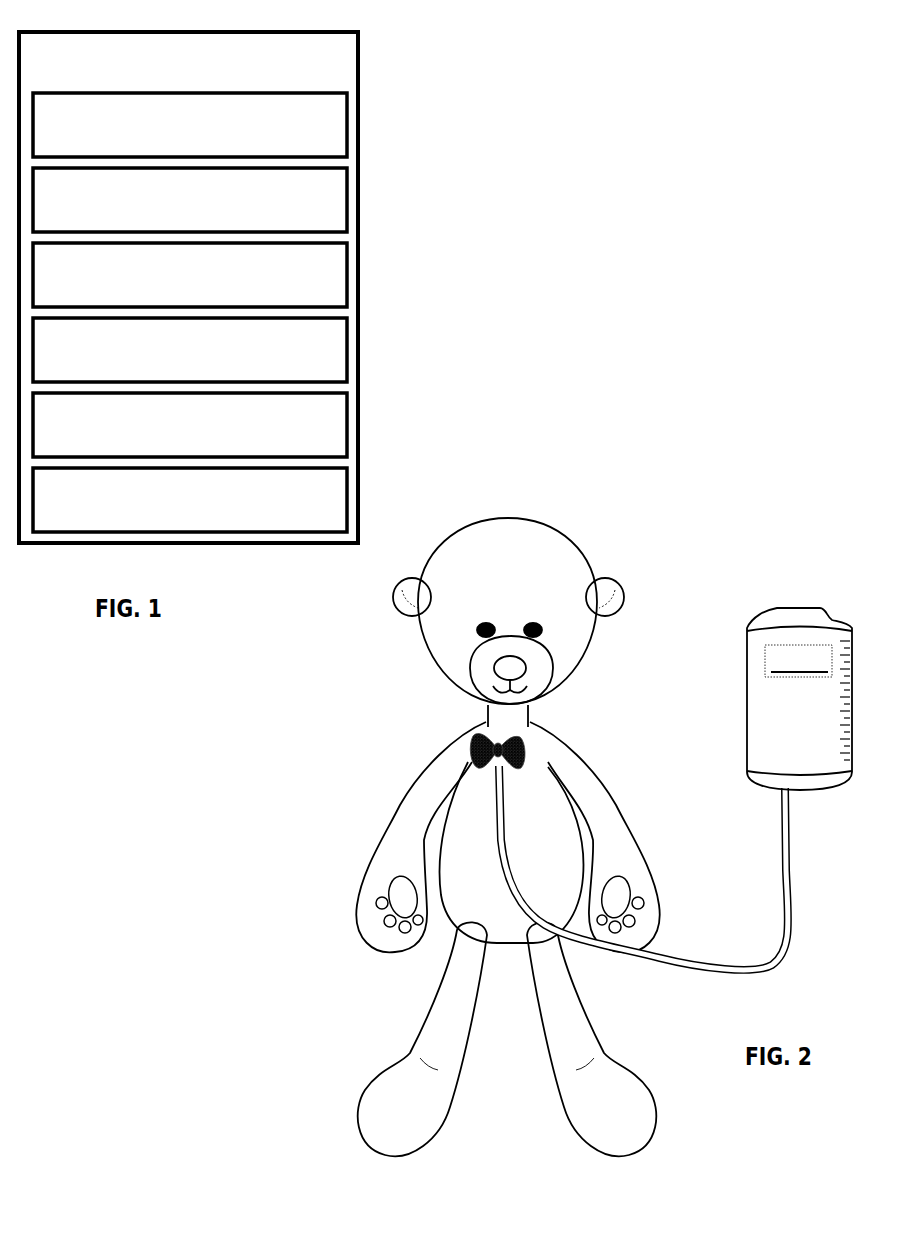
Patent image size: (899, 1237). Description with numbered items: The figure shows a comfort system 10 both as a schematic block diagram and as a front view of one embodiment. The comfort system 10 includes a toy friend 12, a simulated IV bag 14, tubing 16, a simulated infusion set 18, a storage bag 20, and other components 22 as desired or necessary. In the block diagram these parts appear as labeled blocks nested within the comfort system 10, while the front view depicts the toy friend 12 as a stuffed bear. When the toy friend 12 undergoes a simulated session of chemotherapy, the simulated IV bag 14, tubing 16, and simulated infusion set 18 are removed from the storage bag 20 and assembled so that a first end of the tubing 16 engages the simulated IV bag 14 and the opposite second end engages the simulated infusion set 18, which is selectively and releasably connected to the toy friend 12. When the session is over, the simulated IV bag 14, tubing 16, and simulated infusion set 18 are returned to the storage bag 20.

In FIG. 1, the comfort system 10 is at (284, 67).
In FIG. 2, the comfort system 10 is at (595, 422).
In FIG. 1, the toy friend 12 is at (255, 131).
In FIG. 2, the toy friend 12 is at (495, 497).
In FIG. 1, the simulated IV bag 14 is at (288, 206).
In FIG. 2, the simulated IV bag 14 is at (783, 643).
In FIG. 1, the tubing 16 is at (237, 281).
In FIG. 2, the tubing 16 is at (768, 965).
In FIG. 1, the simulated infusion set 18 is at (317, 356).
In FIG. 2, the simulated infusion set 18 is at (460, 745).
In FIG. 1, the storage bag 20 is at (265, 431).
In FIG. 1, the other components 22 is at (233, 504).